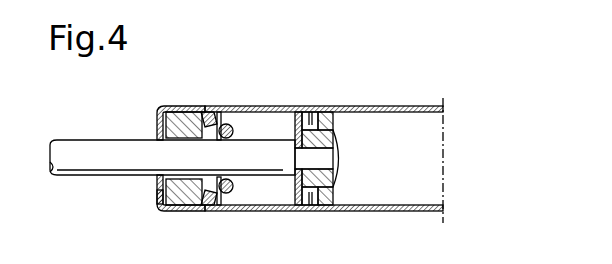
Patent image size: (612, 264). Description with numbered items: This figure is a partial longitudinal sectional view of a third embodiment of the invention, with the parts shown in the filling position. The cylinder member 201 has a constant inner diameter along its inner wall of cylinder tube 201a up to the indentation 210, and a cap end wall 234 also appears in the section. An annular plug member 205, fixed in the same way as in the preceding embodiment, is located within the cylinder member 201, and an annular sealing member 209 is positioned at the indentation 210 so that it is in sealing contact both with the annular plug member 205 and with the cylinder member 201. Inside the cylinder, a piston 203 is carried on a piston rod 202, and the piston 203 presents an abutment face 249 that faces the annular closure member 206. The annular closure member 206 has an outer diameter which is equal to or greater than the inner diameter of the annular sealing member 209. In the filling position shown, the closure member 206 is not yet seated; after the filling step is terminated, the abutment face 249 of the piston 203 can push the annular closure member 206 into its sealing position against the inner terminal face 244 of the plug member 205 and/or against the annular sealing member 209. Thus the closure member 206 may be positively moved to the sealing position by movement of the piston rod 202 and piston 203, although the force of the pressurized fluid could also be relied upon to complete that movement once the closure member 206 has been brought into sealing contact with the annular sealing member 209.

The cylinder member 201 is at (412, 106).
The inner wall of cylinder tube 201a is at (423, 205).
The piston rod 202 is at (85, 142).
The piston 203 is at (336, 127).
The annular plug member 205 is at (178, 122).
The annular closure member 206 is at (235, 122).
The annular sealing member 209 is at (212, 118).
The indentation 210 is at (197, 212).
The cap end wall 234 is at (160, 203).
The inner terminal face 244 is at (224, 205).
The abutment face 249 is at (288, 208).